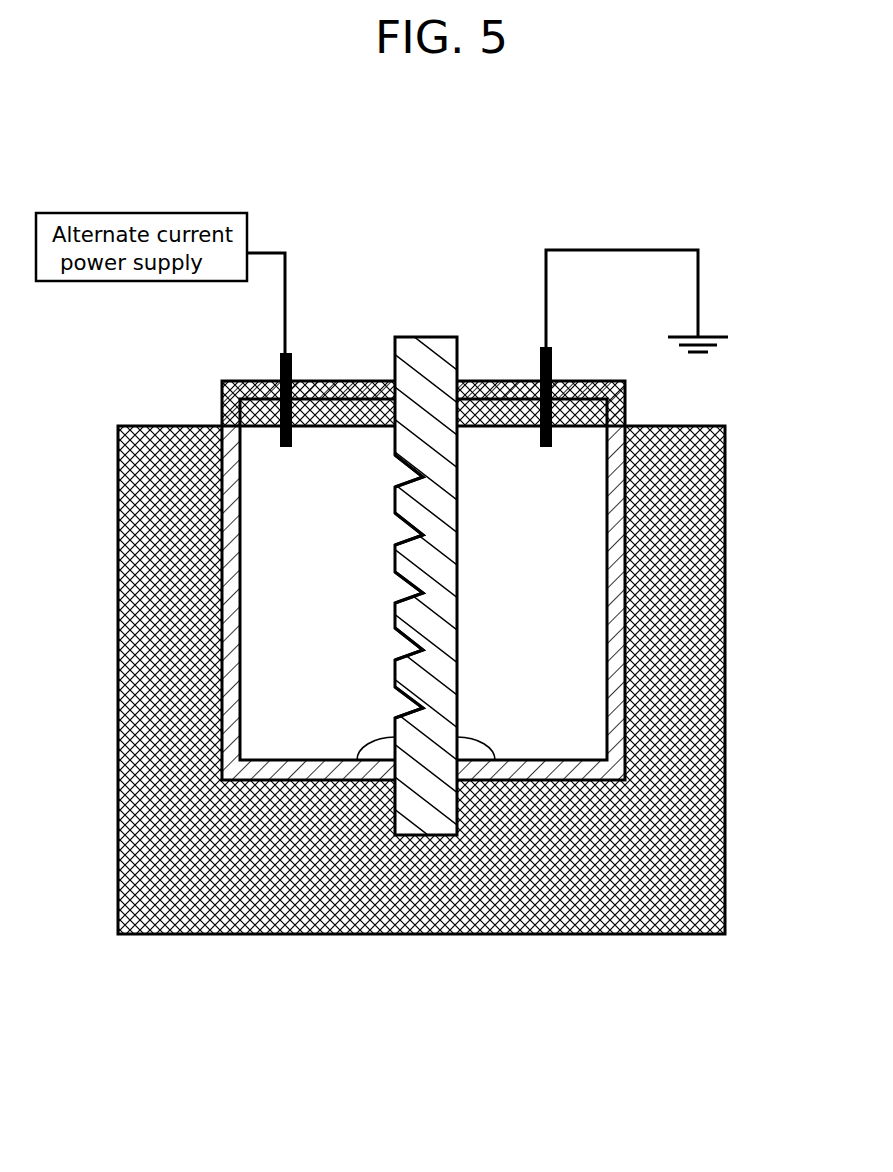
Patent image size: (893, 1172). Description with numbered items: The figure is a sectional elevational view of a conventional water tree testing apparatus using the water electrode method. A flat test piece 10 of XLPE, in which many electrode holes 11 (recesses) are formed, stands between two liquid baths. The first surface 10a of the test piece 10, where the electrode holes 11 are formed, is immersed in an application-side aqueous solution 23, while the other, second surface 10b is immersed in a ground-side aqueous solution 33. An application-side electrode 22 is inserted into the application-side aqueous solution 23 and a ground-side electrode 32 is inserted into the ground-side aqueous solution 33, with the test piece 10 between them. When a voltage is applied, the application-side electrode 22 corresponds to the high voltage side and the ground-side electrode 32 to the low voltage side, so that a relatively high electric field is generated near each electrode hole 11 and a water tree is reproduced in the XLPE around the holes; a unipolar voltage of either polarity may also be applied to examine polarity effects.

The test piece 10 is at (420, 337).
The first surface 10a is at (358, 766).
The second surface 10b is at (494, 766).
The electrode holes 11 is at (420, 592).
The application-side electrode 22 is at (291, 372).
The application-side aqueous solution 23 is at (352, 438).
The ground-side electrode 32 is at (540, 377).
The ground-side aqueous solution 33 is at (472, 438).